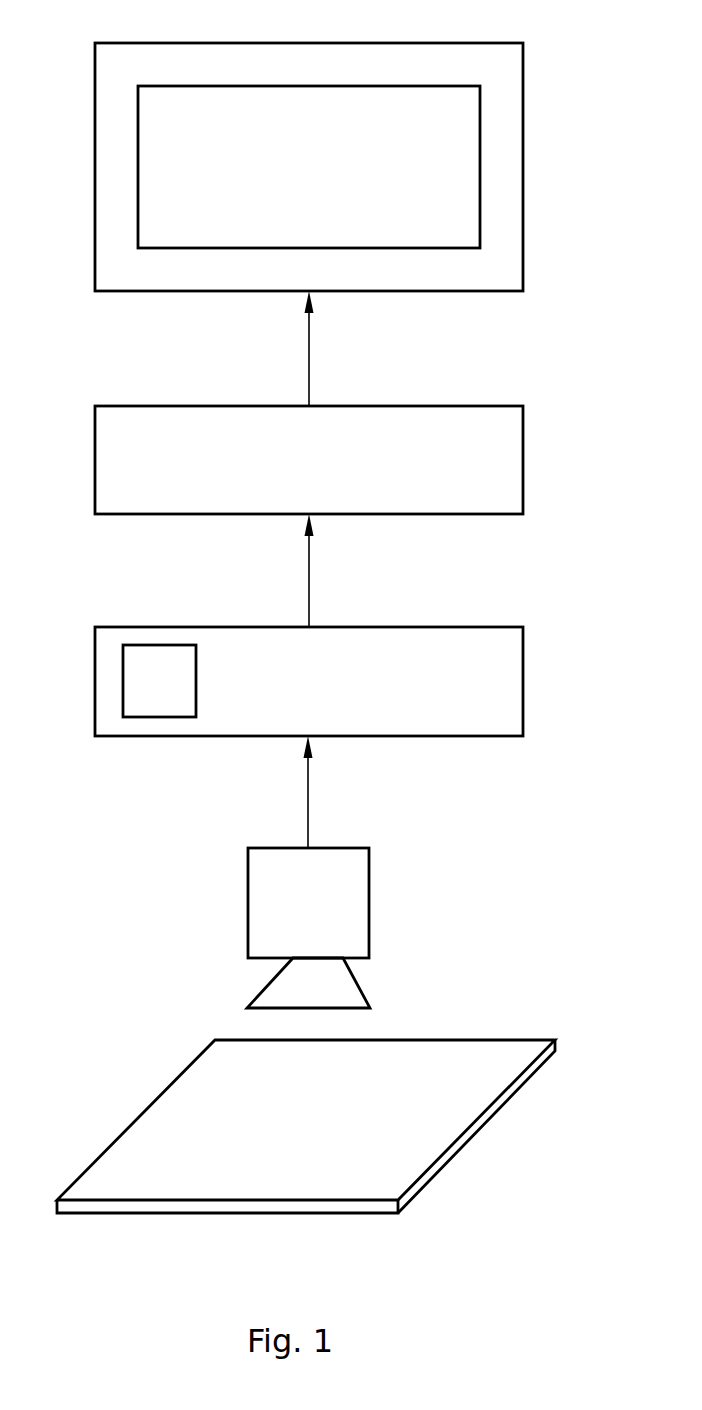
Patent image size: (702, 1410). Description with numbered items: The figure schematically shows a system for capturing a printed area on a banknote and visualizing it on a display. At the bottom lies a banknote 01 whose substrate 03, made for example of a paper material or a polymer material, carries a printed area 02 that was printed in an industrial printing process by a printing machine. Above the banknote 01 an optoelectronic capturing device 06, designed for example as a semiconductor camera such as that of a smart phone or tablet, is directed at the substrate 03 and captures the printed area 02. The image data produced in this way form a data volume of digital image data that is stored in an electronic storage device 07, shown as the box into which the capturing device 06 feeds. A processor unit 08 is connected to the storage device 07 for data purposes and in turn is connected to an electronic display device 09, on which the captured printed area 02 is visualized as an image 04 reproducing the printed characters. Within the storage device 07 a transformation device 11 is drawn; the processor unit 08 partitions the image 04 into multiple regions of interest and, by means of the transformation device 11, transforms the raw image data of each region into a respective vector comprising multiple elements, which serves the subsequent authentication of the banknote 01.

The banknote 01 is at (311, 1143).
The printed area 02 is at (500, 1048).
The substrate 03 is at (503, 1102).
The image 04 is at (309, 167).
The optoelectronic capturing device 06 is at (308, 928).
The electronic storage device 07 is at (309, 681).
The processor unit 08 is at (309, 460).
The display device 09 is at (309, 167).
The transformation device 11 is at (159, 681).